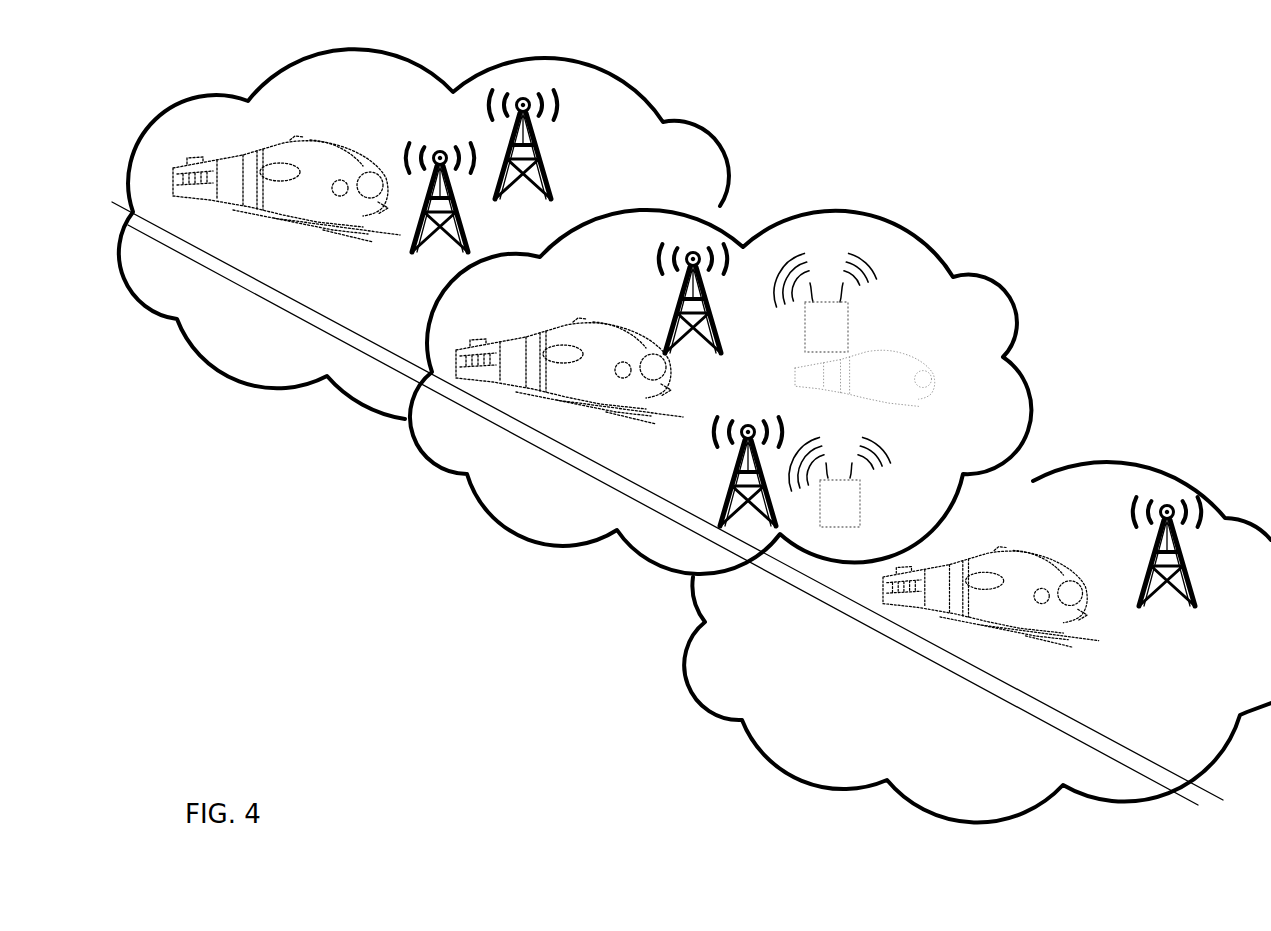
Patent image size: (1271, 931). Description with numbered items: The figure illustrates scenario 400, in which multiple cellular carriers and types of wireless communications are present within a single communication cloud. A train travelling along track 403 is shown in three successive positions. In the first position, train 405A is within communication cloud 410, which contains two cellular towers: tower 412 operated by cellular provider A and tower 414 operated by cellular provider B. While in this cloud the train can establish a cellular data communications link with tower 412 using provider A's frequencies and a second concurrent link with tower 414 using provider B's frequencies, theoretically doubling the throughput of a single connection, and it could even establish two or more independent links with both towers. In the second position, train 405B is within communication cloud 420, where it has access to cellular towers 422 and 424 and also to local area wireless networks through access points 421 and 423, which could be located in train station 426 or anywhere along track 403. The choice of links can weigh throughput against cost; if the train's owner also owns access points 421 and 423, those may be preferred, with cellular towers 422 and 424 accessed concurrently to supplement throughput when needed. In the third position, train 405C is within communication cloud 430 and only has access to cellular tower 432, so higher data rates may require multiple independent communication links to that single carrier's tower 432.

The scenario 400 is at (1199, 59).
The track 403 is at (378, 353).
The train in first position 405A is at (263, 220).
The train in second position 405B is at (593, 400).
The train in third position 405C is at (950, 623).
The communication cloud 410 is at (641, 160).
The cellular tower 412 is at (540, 145).
The cellular tower 414 is at (455, 193).
The communication cloud 420 is at (963, 309).
The access point 421 is at (843, 333).
The cellular tower 422 is at (670, 315).
The access point 423 is at (855, 499).
The cellular tower 424 is at (628, 410).
The train station 426 is at (791, 396).
The communication cloud 430 is at (1102, 477).
The cellular tower 432 is at (1145, 565).